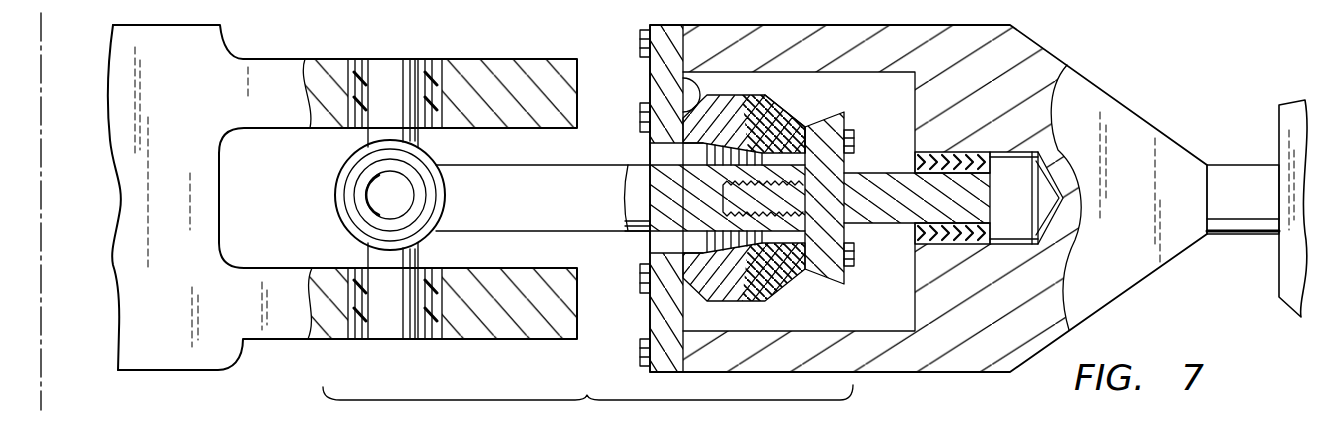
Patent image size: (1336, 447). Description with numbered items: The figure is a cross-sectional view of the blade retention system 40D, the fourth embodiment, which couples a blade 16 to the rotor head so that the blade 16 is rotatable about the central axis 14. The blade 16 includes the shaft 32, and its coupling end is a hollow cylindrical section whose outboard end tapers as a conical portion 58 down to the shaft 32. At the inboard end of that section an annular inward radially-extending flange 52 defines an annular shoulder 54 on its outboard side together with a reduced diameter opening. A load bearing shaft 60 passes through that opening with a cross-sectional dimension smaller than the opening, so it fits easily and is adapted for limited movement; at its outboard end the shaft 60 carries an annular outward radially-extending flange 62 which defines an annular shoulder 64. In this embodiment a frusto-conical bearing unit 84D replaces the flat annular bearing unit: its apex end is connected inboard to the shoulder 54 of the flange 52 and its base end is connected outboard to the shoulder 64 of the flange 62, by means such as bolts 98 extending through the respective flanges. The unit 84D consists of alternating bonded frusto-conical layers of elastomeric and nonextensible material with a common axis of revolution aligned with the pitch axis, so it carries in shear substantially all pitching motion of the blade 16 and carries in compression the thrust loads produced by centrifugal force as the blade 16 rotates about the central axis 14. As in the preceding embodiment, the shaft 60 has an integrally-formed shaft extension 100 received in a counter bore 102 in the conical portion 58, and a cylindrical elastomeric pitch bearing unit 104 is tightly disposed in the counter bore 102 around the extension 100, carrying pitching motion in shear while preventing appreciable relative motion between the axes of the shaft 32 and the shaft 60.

The central axis 14 is at (42, 395).
The blade 16 is at (1293, 270).
The shaft 32 is at (1249, 215).
The retention system 40D is at (588, 409).
The flange 52 is at (648, 138).
The annular shoulder 54 is at (662, 74).
The conical portion 58 is at (1158, 132).
The load bearing shaft 60 is at (636, 195).
The flange 62 is at (846, 121).
The annular shoulder 64 is at (806, 126).
The frusto-conical bearing unit 84D is at (788, 100).
The bolts 98 is at (642, 112).
The shaft extension 100 is at (900, 165).
The counter bore 102 is at (975, 162).
The cylindrical elastomeric pitch bearing unit 104 is at (995, 150).